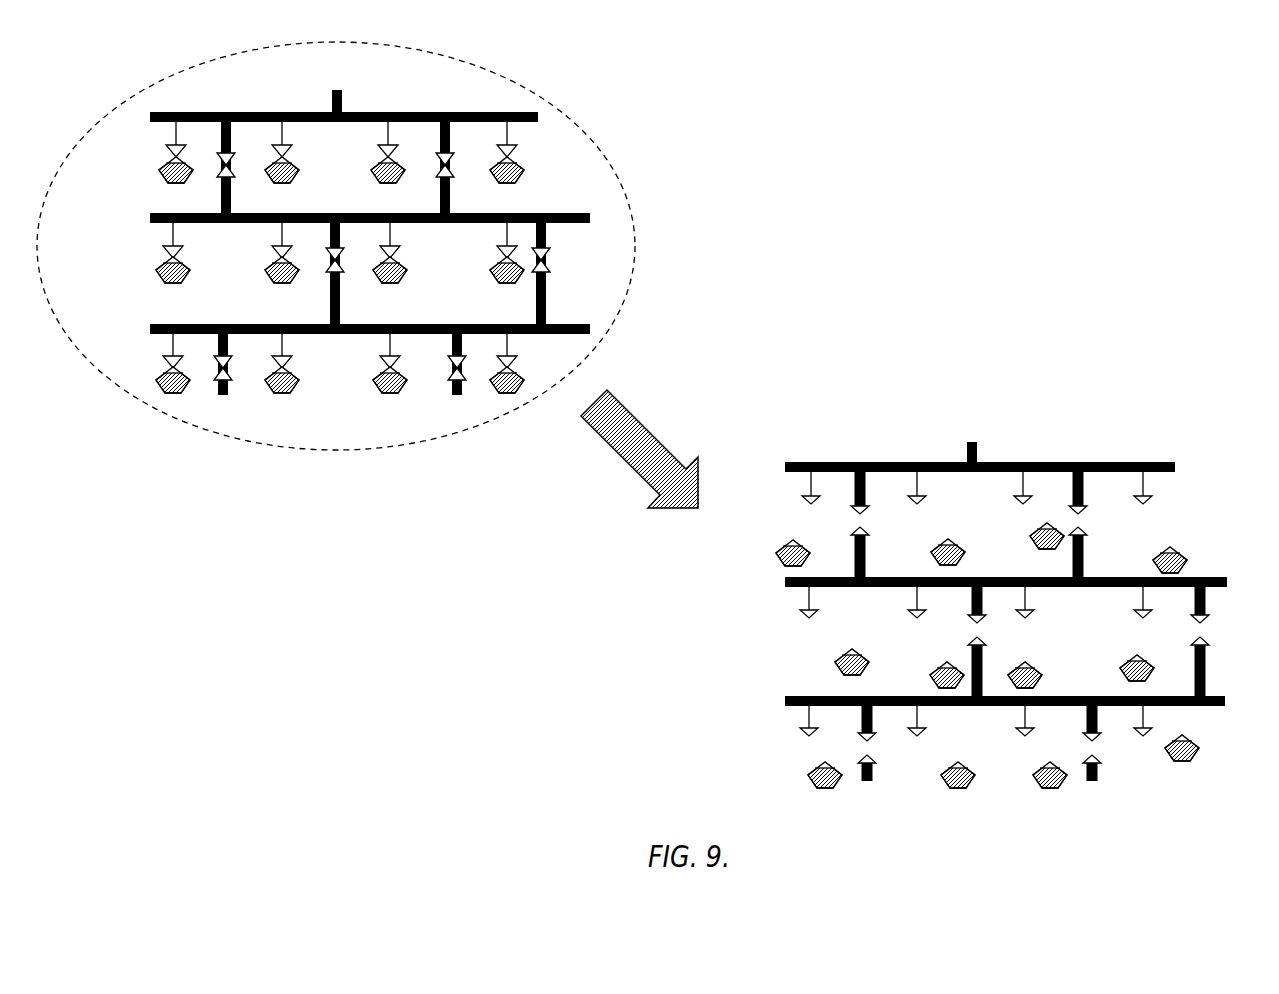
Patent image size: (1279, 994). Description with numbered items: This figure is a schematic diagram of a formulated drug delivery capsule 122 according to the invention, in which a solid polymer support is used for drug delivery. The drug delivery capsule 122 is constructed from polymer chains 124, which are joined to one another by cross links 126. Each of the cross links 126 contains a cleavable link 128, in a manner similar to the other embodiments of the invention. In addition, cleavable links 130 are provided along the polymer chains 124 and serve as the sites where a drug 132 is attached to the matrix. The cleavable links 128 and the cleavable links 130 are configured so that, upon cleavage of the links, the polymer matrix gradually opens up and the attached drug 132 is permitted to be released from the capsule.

The drug delivery capsule 122 is at (520, 80).
The polymer chains 124 is at (416, 112).
The cross links 126 is at (340, 300).
The cleavable links 128 is at (448, 166).
The cleavable links 130 is at (288, 158).
The drug 132 is at (291, 172).